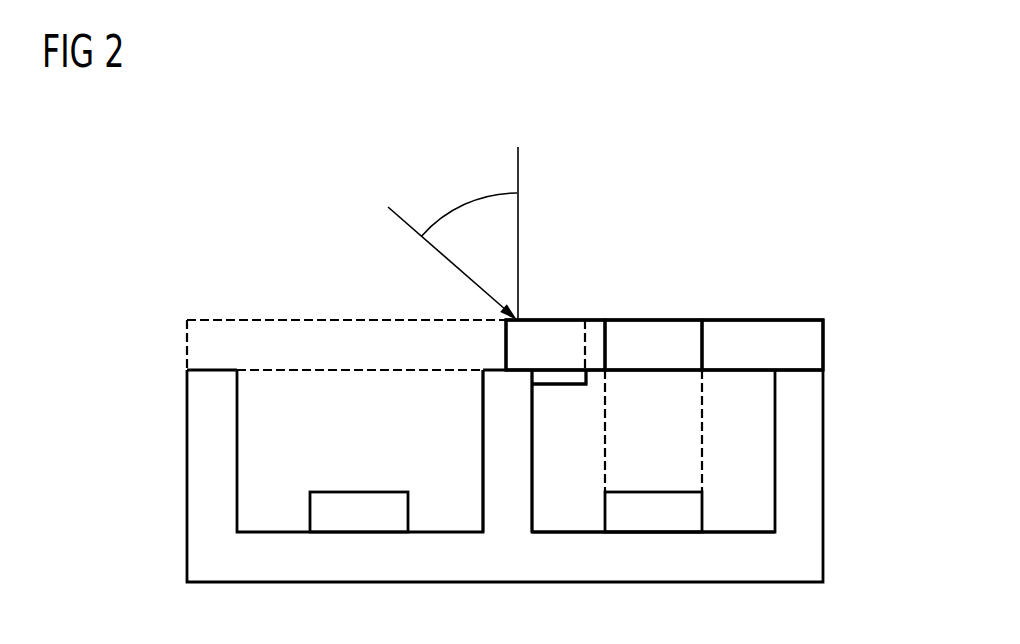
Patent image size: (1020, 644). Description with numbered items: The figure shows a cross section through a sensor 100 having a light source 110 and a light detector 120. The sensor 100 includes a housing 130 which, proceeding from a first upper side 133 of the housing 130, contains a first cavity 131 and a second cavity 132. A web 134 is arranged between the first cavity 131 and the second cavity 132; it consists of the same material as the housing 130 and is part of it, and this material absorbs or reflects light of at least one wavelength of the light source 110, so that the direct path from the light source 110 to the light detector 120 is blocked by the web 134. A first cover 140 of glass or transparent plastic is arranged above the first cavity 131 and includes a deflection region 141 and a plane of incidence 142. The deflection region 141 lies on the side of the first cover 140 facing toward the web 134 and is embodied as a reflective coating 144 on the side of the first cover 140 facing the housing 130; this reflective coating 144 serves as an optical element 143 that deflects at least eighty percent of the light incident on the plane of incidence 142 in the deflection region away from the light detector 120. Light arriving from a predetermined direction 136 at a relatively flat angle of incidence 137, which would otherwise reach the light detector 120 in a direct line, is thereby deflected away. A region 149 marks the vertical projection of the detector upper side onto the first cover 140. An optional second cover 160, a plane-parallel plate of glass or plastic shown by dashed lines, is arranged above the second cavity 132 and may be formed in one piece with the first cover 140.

The sensor 100 is at (191, 238).
The light source 110 is at (360, 517).
The light detector 120 is at (655, 517).
The housing 130 is at (812, 560).
The first cavity 131 is at (741, 517).
The second cavity 132 is at (275, 517).
The first upper side 133 is at (758, 532).
The web 134 is at (509, 517).
The predetermined direction 136 is at (400, 218).
The angle of incidence 137 is at (507, 253).
The first cover 140 is at (810, 346).
The deflection region 141 is at (552, 338).
The plane of incidence 142 is at (637, 322).
The optical element 143 is at (563, 378).
The reflective coating 144 is at (559, 423).
The region 149 is at (684, 338).
The second cover 160 is at (200, 343).